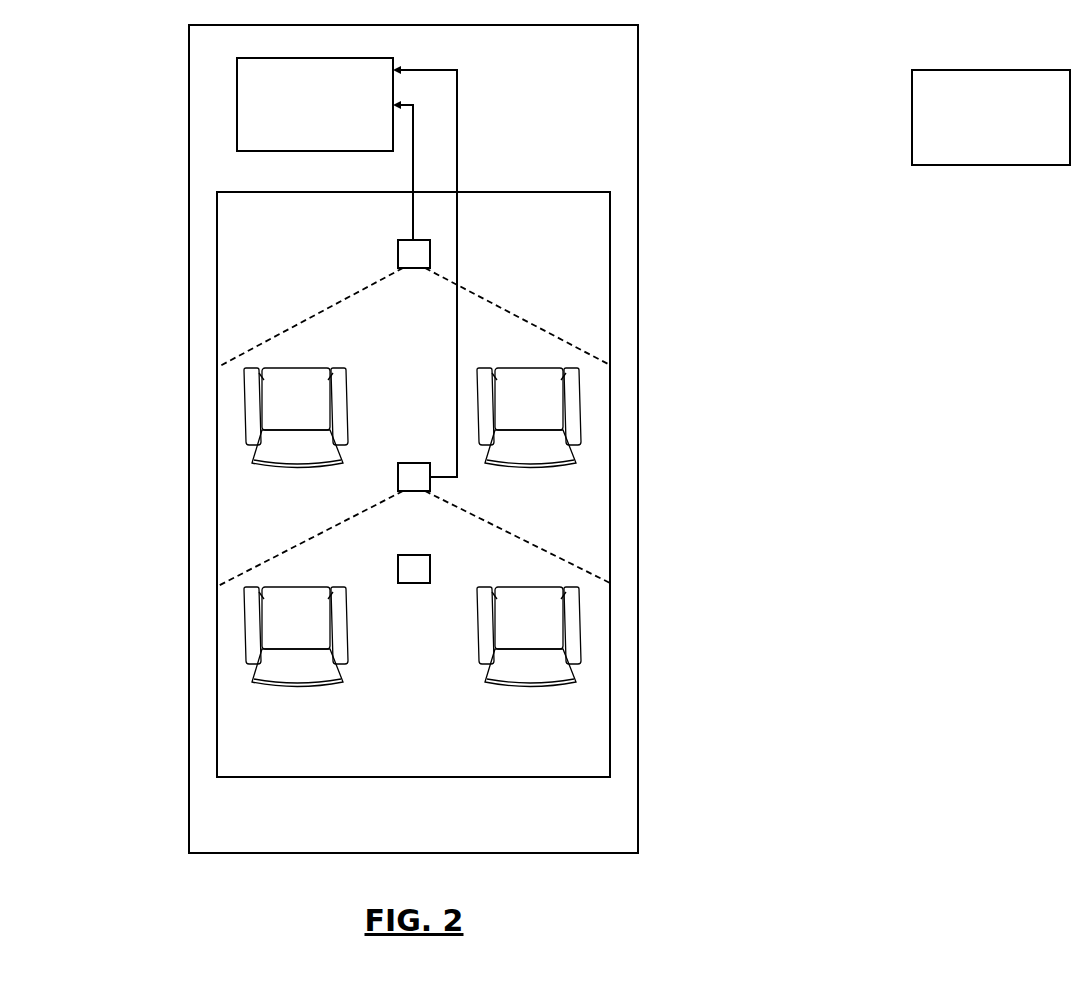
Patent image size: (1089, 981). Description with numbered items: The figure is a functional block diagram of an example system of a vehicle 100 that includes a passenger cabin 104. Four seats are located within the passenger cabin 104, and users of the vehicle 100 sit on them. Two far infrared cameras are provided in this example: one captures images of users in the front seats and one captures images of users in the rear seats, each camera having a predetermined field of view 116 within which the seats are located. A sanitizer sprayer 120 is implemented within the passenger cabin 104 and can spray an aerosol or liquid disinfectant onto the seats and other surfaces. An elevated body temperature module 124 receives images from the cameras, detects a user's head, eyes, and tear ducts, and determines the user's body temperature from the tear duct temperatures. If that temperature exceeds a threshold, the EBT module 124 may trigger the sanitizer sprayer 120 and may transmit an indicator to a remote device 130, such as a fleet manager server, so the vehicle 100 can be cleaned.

The vehicle 100 is at (638, 175).
The passenger cabin 104 is at (610, 343).
The field of view 116 is at (317, 313).
The sanitizer sprayer 120 is at (398, 563).
The elevated body temperature (EBT) module 124 is at (350, 152).
The remote device 130 is at (961, 70).